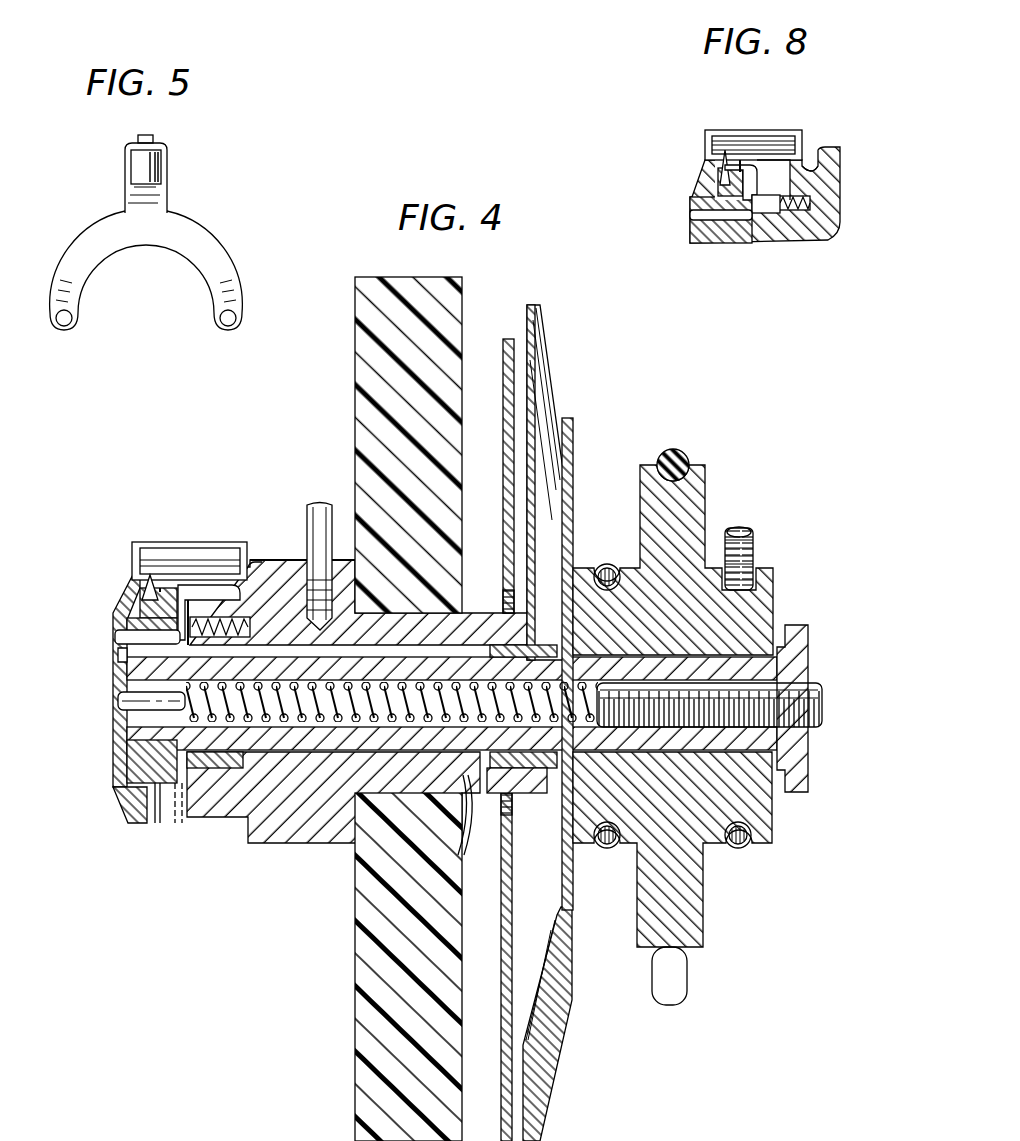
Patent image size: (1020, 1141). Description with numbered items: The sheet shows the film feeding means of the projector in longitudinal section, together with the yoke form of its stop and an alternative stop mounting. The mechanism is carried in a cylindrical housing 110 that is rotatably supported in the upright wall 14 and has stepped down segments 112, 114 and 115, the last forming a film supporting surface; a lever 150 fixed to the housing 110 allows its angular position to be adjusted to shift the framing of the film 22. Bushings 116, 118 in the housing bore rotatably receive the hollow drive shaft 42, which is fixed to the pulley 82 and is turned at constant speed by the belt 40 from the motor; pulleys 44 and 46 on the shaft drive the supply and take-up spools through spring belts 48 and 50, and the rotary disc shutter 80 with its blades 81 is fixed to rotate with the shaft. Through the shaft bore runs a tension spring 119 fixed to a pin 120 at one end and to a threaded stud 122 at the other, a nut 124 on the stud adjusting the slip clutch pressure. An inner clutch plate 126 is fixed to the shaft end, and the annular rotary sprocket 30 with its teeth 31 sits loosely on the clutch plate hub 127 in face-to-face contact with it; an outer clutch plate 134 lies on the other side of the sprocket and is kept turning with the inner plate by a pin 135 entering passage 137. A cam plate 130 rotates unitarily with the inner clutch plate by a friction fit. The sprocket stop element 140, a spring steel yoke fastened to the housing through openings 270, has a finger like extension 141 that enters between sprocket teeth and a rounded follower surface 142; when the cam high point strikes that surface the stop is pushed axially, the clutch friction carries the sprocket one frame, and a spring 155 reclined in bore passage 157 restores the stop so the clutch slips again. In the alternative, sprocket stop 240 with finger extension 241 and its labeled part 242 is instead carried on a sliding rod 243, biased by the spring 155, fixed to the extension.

In FIG. 4, the upright wall 14 is at (438, 330).
In FIG. 4, the film 22 is at (190, 588).
In FIG. 8, the rotary sprocket 30 is at (722, 180).
In FIG. 4, the rotary sprocket 30 is at (142, 587).
In FIG. 4, the teeth 31 is at (138, 822).
In FIG. 4, the belt 40 is at (683, 456).
In FIG. 4, the drive shaft 42 is at (462, 780).
In FIG. 4, the pulley 44 is at (775, 605).
In FIG. 4, the pulley 46 is at (606, 850).
In FIG. 4, the spring belt 48 is at (751, 545).
In FIG. 4, the spring belt 50 is at (606, 564).
In FIG. 4, the plate 80 is at (572, 442).
In FIG. 4, the blades 81 is at (548, 343).
In FIG. 4, the pulley 82 is at (772, 896).
In FIG. 8, the cylindrical housing 110 is at (838, 162).
In FIG. 4, the cylindrical housing 110 is at (285, 578).
In FIG. 4, the stepped down segment 112 is at (232, 825).
In FIG. 4, the stepped down segment 114 is at (292, 562).
In FIG. 8, the stepped down segment 115 is at (818, 168).
In FIG. 4, the stepped down segment 115 is at (256, 562).
In FIG. 4, the bushing 116 is at (215, 768).
In FIG. 4, the bushing 118 is at (505, 795).
In FIG. 4, the tension spring 119 is at (368, 688).
In FIG. 4, the pin 120 is at (118, 698).
In FIG. 4, the threaded stud 122 is at (820, 700).
In FIG. 4, the nut 124 is at (797, 662).
In FIG. 4, the inner clutch plate 126 is at (155, 828).
In FIG. 4, the clutch plate hub 127 is at (135, 755).
In FIG. 4, the cam plate 130 is at (178, 830).
In FIG. 8, the outer clutch plate 134 is at (706, 178).
In FIG. 4, the outer clutch plate 134 is at (137, 600).
In FIG. 8, the pin 135 is at (695, 218).
In FIG. 4, the pin 135 is at (116, 638).
In FIG. 4, the passage 137 is at (117, 660).
In FIG. 5, the sprocket stop element 140 is at (205, 210).
In FIG. 8, the sprocket stop element 140 is at (753, 145).
In FIG. 4, the sprocket stop element 140 is at (195, 601).
In FIG. 5, the finger like extension 141 is at (152, 139).
In FIG. 4, the finger like extension 141 is at (158, 590).
In FIG. 5, the camming abutment or follower surface 142 is at (152, 168).
In FIG. 4, the camming abutment or follower surface 142 is at (170, 606).
In FIG. 4, the lever 150 is at (326, 506).
In FIG. 8, the spring 155 is at (812, 203).
In FIG. 4, the spring 155 is at (250, 628).
In FIG. 8, the bore passage 157 is at (812, 185).
In FIG. 4, the bore passage 157 is at (238, 620).
In FIG. 8, the sprocket stop 240 is at (760, 172).
In FIG. 8, the finger extension 241 is at (742, 165).
In FIG. 8, the slot 242 is at (735, 183).
In FIG. 8, the sliding rod 243 is at (768, 208).
In FIG. 5, the openings 270 is at (224, 325).